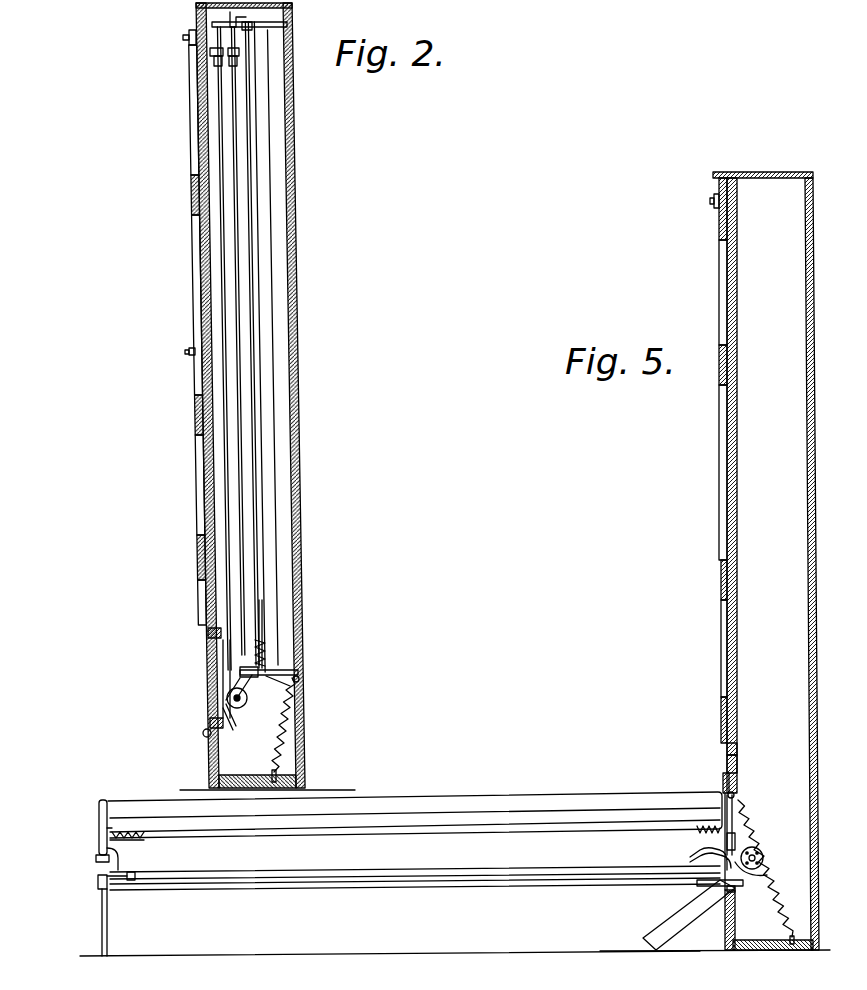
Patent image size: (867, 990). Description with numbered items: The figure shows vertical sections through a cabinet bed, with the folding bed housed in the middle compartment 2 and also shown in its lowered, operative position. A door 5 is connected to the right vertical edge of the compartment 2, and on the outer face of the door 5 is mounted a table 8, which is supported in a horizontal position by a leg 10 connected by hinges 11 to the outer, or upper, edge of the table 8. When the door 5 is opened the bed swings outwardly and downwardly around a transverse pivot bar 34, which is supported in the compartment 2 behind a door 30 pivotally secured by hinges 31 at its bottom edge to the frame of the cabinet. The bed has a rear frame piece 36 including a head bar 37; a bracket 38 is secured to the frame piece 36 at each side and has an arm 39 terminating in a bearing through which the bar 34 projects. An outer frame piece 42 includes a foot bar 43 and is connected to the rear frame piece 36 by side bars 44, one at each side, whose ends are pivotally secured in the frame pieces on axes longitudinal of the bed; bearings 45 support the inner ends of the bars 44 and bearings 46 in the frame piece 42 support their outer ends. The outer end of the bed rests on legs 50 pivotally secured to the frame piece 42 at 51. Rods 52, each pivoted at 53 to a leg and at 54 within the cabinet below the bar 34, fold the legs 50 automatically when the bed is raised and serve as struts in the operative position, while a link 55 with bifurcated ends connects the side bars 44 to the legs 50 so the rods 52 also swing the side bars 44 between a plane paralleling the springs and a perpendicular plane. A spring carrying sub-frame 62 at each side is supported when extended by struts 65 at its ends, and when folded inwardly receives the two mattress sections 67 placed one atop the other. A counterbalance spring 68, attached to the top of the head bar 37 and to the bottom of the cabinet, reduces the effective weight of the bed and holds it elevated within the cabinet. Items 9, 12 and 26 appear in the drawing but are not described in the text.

In FIG. 2, the compartment 2 is at (290, 24).
In FIG. 5, the compartment 2 is at (766, 561).
In FIG. 2, the door 5 is at (188, 40).
In FIG. 5, the door 5 is at (737, 496).
In FIG. 2, the table 8 is at (198, 480).
In FIG. 5, the table 8 is at (719, 304).
In FIG. 2, the plate section 9 is at (204, 586).
In FIG. 5, the plate section 9 is at (727, 748).
In FIG. 2, the leg 10 is at (190, 205).
In FIG. 5, the leg 10 is at (719, 368).
In FIG. 2, the hinges 11 is at (193, 58).
In FIG. 5, the hinges 11 is at (716, 216).
In FIG. 2, the plate section 12 is at (198, 372).
In FIG. 5, the plate section 12 is at (708, 472).
In FIG. 5, the leg 26 is at (740, 760).
In FIG. 2, the door 30 is at (206, 690).
In FIG. 5, the door 30 is at (672, 918).
In FIG. 5, the hinges 31 is at (722, 892).
In FIG. 2, the transverse pivot bar 34 is at (244, 704).
In FIG. 5, the transverse pivot bar 34 is at (762, 856).
In FIG. 2, the rear frame piece 36 is at (248, 668).
In FIG. 5, the rear frame piece 36 is at (697, 838).
In FIG. 2, the head bar 37 is at (298, 676).
In FIG. 5, the head bar 37 is at (735, 796).
In FIG. 2, the bracket 38 is at (290, 686).
In FIG. 5, the bracket 38 is at (704, 852).
In FIG. 2, the arm 39 is at (250, 686).
In FIG. 5, the arm 39 is at (767, 875).
In FIG. 2, the outer frame piece 42 is at (262, 52).
In FIG. 2, the foot bar 43 is at (286, 28).
In FIG. 2, the side bars 44 is at (237, 115).
In FIG. 2, the bearings 45 is at (236, 680).
In FIG. 5, the bearings 45 is at (766, 872).
In FIG. 2, the bearings 46 is at (230, 17).
In FIG. 2, the legs 50 is at (200, 70).
In FIG. 2, the pivot 51 is at (122, 860).
In FIG. 2, the rods 52 is at (217, 120).
In FIG. 2, the pivot 53 is at (208, 78).
In FIG. 2, the pivot 54 is at (233, 730).
In FIG. 5, the pivot 54 is at (740, 886).
In FIG. 2, the link 55 is at (225, 58).
In FIG. 2, the spring carrying sub-frame 62 is at (264, 30).
In FIG. 2, the struts 65 is at (296, 668).
In FIG. 5, the struts 65 is at (726, 800).
In FIG. 2, the mattress sections 67 is at (268, 240).
In FIG. 2, the spring 68 is at (280, 740).